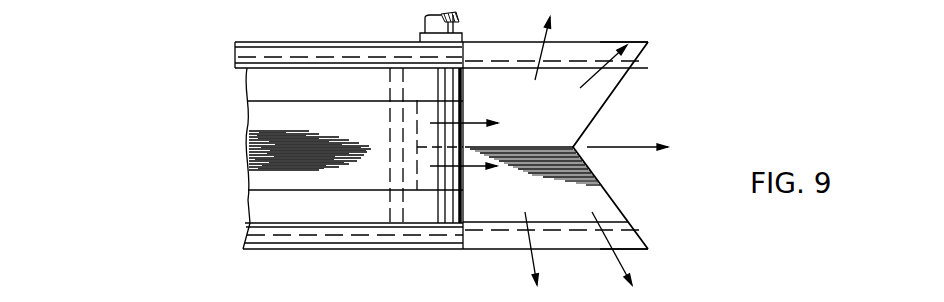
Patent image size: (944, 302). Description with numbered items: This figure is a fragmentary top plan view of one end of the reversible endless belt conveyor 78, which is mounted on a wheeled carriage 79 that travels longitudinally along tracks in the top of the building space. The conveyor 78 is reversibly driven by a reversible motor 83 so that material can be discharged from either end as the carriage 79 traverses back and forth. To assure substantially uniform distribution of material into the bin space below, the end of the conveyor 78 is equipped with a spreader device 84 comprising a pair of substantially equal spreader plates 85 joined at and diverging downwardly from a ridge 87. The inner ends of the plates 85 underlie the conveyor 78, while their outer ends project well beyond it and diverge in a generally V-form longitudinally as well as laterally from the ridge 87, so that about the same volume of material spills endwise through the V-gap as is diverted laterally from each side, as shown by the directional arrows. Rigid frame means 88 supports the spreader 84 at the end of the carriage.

The conveyor 78 is at (263, 172).
The carriage 79 is at (359, 41).
The reversible motor 83 is at (458, 23).
The spreader device 84 is at (600, 125).
The spreader plates 85 is at (573, 128).
The ridge 87 is at (508, 147).
The rigid frame means 88 is at (645, 49).